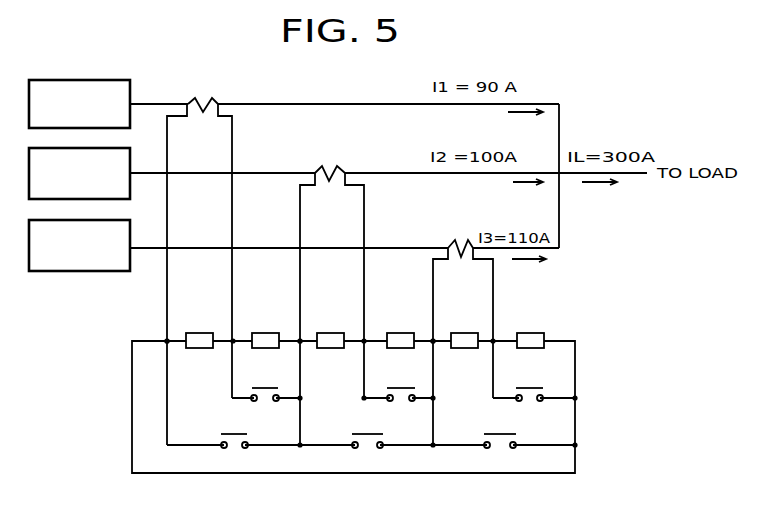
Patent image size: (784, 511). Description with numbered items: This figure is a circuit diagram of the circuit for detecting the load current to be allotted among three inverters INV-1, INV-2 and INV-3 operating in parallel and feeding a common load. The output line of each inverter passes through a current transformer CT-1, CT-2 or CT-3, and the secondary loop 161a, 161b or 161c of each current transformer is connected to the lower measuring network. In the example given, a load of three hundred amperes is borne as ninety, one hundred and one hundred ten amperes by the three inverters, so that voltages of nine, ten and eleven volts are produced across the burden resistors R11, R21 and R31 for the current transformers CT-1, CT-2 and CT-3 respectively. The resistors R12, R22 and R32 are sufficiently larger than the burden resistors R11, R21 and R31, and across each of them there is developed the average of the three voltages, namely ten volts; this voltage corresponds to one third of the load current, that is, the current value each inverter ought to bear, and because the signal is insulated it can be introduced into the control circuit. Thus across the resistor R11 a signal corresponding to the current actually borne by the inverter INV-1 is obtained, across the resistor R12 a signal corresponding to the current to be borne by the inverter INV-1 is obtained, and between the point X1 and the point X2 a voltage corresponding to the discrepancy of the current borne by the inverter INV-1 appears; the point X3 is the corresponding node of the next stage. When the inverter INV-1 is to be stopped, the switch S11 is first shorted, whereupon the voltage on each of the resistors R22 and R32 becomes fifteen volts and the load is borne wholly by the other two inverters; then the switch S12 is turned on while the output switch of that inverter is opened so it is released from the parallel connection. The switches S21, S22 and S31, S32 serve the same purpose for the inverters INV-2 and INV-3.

The current transformer secondary loop (CT-1) 161a is at (199, 274).
The current transformer secondary loop (CT-2) 161b is at (332, 309).
The current transformer secondary loop (CT-3) 161c is at (463, 346).
The current transformer CT-1 is at (207, 95).
The current transformer CT-2 is at (336, 165).
The current transformer CT-3 is at (451, 238).
The inverter INV-1 is at (79, 104).
The inverter INV-2 is at (79, 173).
The inverter INV-3 is at (79, 245).
The burden resistor R11 is at (199, 342).
The resistor R12 is at (266, 342).
The burden resistor R21 is at (333, 342).
The resistor R22 is at (398, 342).
The burden resistor R31 is at (464, 342).
The resistor R32 is at (529, 342).
The switch S11 is at (233, 431).
The switch S12 is at (266, 406).
The switch S21 is at (366, 431).
The switch S22 is at (402, 406).
The switch S31 is at (498, 431).
The switch S32 is at (530, 406).
The point X1 is at (164, 344).
The point X2 is at (304, 346).
The point X3 is at (437, 346).